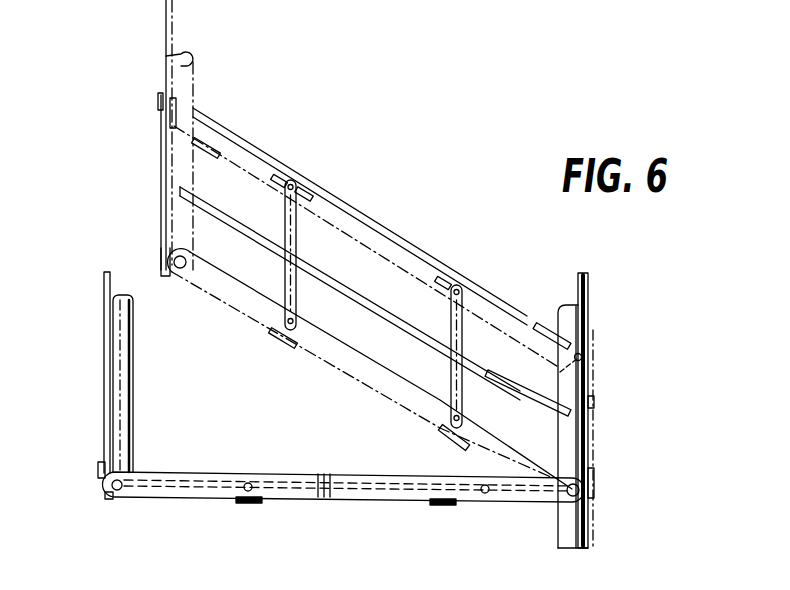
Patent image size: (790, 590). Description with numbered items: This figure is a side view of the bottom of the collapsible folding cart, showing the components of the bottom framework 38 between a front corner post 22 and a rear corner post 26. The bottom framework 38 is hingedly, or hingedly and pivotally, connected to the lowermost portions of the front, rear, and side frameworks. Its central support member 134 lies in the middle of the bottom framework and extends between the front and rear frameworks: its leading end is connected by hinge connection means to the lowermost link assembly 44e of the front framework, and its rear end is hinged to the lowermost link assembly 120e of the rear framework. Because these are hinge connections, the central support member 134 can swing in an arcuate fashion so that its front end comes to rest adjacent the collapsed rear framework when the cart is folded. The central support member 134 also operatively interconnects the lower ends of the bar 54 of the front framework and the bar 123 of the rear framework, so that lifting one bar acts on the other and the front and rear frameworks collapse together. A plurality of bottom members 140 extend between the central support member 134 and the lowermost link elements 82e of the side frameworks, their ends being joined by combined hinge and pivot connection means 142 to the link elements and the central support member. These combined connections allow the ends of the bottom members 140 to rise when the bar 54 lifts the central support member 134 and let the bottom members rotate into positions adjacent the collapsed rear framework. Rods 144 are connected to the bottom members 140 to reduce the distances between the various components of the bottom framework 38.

The front corner post 22 is at (125, 398).
The rear corner post 26 is at (578, 456).
The bottom framework 38 is at (447, 160).
The link assembly 44e is at (160, 182).
The bar 54 is at (166, 30).
The link element 82e is at (363, 372).
The link assembly 120e is at (594, 403).
The bar 123 is at (591, 284).
The central support member 134 is at (404, 240).
The bottom member 140 is at (302, 237).
The combined hinge and pivot connection means 142 is at (279, 176).
The rod 144 is at (370, 299).